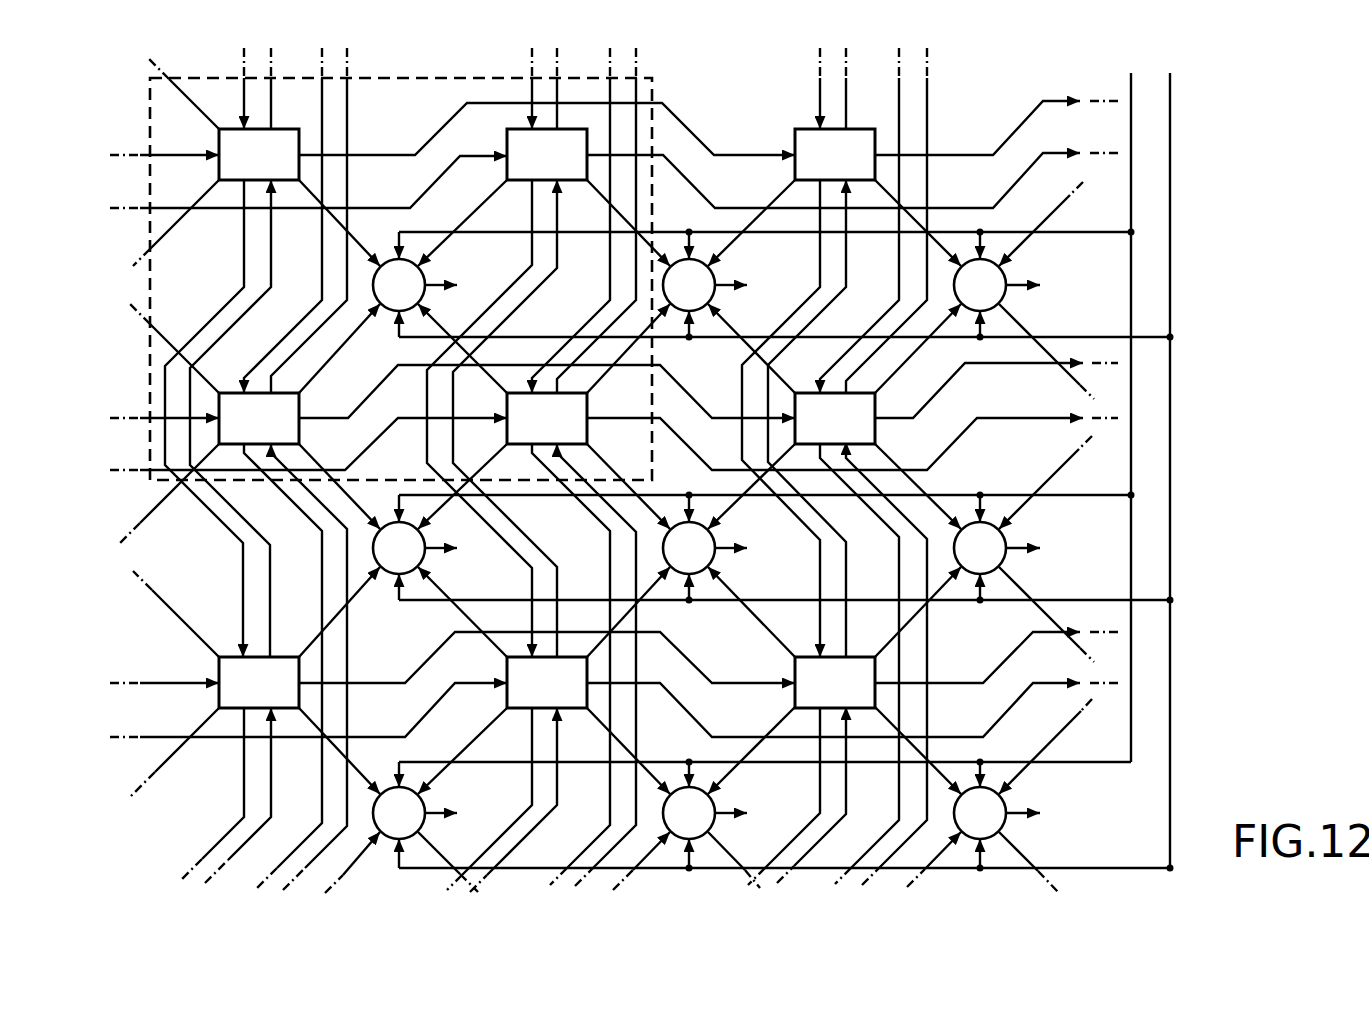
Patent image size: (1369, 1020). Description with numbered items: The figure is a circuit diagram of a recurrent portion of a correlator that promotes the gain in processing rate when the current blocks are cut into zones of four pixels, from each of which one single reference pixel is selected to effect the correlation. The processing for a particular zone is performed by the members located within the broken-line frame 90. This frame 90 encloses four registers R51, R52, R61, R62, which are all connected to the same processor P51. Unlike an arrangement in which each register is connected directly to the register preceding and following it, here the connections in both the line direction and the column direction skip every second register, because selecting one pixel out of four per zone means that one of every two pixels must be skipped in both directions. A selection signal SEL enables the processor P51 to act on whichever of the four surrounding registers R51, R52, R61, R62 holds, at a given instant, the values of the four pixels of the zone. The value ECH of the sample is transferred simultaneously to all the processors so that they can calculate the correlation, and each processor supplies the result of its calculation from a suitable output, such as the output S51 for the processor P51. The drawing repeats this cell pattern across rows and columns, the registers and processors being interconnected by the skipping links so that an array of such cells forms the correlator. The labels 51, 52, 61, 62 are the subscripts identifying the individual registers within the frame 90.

The broken-line frame 90 is at (150, 276).
The register R51 51 is at (259, 154).
The register R52 52 is at (547, 154).
The register R61 61 is at (259, 418).
The register R62 62 is at (547, 418).
The register R51 is at (259, 154).
The register R52 is at (547, 154).
The register R61 is at (259, 418).
The register R62 is at (547, 418).
The processor P51 is at (399, 285).
The output S51 is at (456, 269).
The selection signal SEL is at (1131, 215).
The sample value ECH is at (1200, 223).